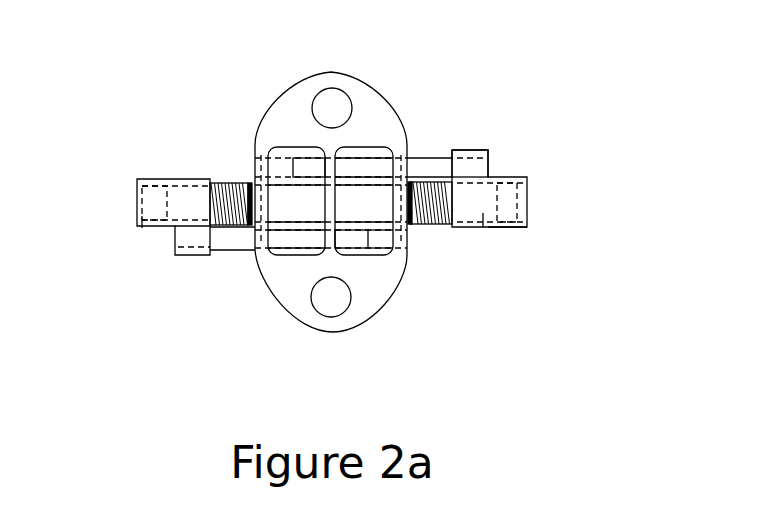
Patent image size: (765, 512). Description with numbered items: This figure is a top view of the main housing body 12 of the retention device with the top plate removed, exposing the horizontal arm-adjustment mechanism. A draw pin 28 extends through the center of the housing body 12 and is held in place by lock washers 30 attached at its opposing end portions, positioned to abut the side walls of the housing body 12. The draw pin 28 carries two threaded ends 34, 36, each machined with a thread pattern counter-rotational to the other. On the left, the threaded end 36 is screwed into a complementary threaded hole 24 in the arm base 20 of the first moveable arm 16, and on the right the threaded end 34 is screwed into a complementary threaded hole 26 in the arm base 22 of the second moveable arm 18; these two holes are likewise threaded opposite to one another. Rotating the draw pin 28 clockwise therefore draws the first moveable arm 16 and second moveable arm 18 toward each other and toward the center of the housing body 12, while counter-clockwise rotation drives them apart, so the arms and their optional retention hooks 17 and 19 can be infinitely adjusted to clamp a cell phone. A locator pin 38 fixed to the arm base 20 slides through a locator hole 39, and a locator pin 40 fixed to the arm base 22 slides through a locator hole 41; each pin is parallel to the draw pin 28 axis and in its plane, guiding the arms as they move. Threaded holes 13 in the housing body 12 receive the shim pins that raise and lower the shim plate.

The housing body 12 is at (375, 90).
The threaded holes 13 is at (331, 92).
The first moveable arm 16 is at (137, 200).
The retention hook 17 is at (142, 227).
The second moveable arm 18 is at (528, 205).
The retention hook 19 is at (507, 190).
The arm base 20 is at (157, 178).
The arm base 22 is at (515, 227).
The threaded hole 24 is at (182, 213).
The threaded hole 26 is at (482, 213).
The draw pin 28 is at (367, 213).
The lock washer 30 is at (250, 183).
The threaded end 34 is at (442, 225).
The threaded end 36 is at (220, 182).
The locator pin 38 is at (238, 243).
The locator hole 39 is at (257, 250).
The locator pin 40 is at (448, 150).
The locator hole 41 is at (402, 147).